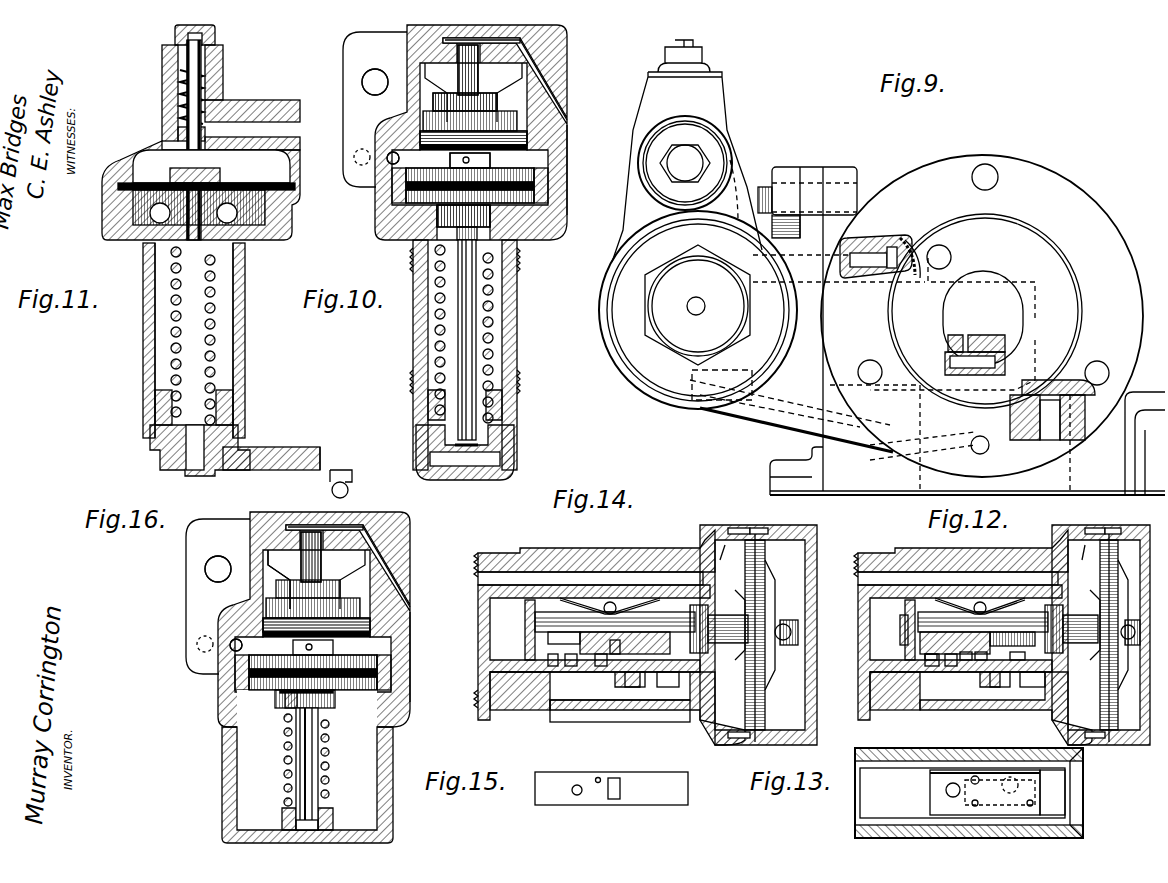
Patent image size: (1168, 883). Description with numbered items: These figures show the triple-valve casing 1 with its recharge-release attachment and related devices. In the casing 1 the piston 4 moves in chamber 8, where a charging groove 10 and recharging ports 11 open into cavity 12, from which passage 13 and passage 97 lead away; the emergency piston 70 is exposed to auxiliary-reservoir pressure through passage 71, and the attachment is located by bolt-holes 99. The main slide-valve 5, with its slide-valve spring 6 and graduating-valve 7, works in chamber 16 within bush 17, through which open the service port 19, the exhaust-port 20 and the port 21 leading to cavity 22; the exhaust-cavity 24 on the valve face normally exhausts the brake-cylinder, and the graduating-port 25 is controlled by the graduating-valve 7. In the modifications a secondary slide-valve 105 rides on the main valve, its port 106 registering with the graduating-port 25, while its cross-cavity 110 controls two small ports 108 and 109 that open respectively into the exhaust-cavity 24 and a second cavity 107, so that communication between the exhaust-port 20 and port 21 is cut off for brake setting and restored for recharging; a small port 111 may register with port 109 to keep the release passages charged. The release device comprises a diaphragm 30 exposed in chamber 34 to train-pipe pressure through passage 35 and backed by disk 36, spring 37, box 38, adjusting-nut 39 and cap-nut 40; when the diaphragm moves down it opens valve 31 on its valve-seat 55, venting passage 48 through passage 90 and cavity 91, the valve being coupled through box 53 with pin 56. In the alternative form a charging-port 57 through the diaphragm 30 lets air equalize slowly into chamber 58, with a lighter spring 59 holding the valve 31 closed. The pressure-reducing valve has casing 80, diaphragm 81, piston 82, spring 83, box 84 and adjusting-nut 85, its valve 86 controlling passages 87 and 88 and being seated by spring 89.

In FIG. 9, the main casing 1 is at (1117, 234).
In FIG. 14, the piston 4 is at (768, 564).
In FIG. 12, the piston 4 is at (1120, 574).
In FIG. 12, the slide-valve 5 is at (933, 666).
In FIG. 13, the slide-valve 5 is at (930, 774).
In FIG. 14, the slide-valve spring 6 is at (590, 581).
In FIG. 12, the slide-valve spring 6 is at (958, 581).
In FIG. 12, the graduating-valve 7 is at (1015, 635).
In FIG. 14, the chamber 8 is at (786, 644).
In FIG. 12, the chamber 8 is at (1130, 647).
In FIG. 14, the charging groove 10 is at (727, 557).
In FIG. 12, the charging groove 10 is at (1087, 559).
In FIG. 9, the recharging ports 11 is at (918, 255).
In FIG. 14, the recharging ports 11 is at (740, 528).
In FIG. 12, the recharging ports 11 is at (1112, 528).
In FIG. 9, the cavity 12 is at (906, 245).
In FIG. 14, the cavity 12 is at (757, 530).
In FIG. 12, the cavity 12 is at (1108, 530).
In FIG. 14, the passage 13 is at (500, 578).
In FIG. 12, the passage 13 is at (872, 578).
In FIG. 14, the slide-valve chamber 16 is at (708, 612).
In FIG. 12, the slide-valve chamber 16 is at (1071, 626).
In FIG. 9, the bush 17 is at (955, 338).
In FIG. 14, the bush 17 is at (605, 598).
In FIG. 12, the bush 17 is at (1020, 596).
In FIG. 14, the service port 19 is at (590, 666).
In FIG. 12, the service port 19 is at (940, 660).
In FIG. 14, the exhaust-port 20 is at (635, 679).
In FIG. 12, the exhaust-port 20 is at (1000, 679).
In FIG. 13, the exhaust-port 20 is at (1040, 774).
In FIG. 9, the port 21 is at (985, 340).
In FIG. 14, the port 21 is at (708, 672).
In FIG. 12, the port 21 is at (1040, 660).
In FIG. 13, the port 21 is at (1035, 805).
In FIG. 9, the cavity 22 is at (952, 324).
In FIG. 14, the cavity 22 is at (668, 679).
In FIG. 12, the cavity 22 is at (1032, 679).
In FIG. 14, the exhaust-cavity 24 is at (620, 709).
In FIG. 13, the exhaust-cavity 24 is at (1035, 790).
In FIG. 14, the graduating-port 25 is at (575, 660).
In FIG. 12, the graduating-port 25 is at (951, 666).
In FIG. 13, the graduating-port 25 is at (946, 790).
In FIG. 10, the diaphragm 30 is at (392, 190).
In FIG. 16, the diaphragm 30 is at (235, 680).
In FIG. 10, the valve 31 is at (455, 60).
In FIG. 16, the valve 31 is at (308, 545).
In FIG. 10, the chamber 34 is at (440, 145).
In FIG. 16, the chamber 34 is at (330, 650).
In FIG. 10, the passage 35 is at (388, 162).
In FIG. 9, the passage 35 is at (796, 404).
In FIG. 16, the passage 35 is at (228, 645).
In FIG. 10, the disk 36 is at (440, 212).
In FIG. 16, the disk 36 is at (385, 680).
In FIG. 10, the spring 37 is at (495, 292).
In FIG. 10, the box 38 is at (522, 250).
In FIG. 10, the adjusting-nut 39 is at (517, 395).
In FIG. 10, the cap-nut 40 is at (516, 436).
In FIG. 10, the passage 48 is at (540, 68).
In FIG. 16, the passage 48 is at (395, 566).
In FIG. 10, the box 53 is at (500, 110).
In FIG. 10, the valve-seat 55 is at (445, 55).
In FIG. 16, the valve-seat 55 is at (290, 542).
In FIG. 10, the pin 56 is at (490, 158).
In FIG. 16, the charging-port 57 is at (270, 694).
In FIG. 16, the chamber 58 is at (307, 785).
In FIG. 16, the spring 59 is at (330, 772).
In FIG. 9, the piston 70 is at (1088, 430).
In FIG. 9, the passage 71 is at (1058, 390).
In FIG. 11, the casing 80 is at (162, 106).
In FIG. 11, the diaphragm 81 is at (165, 200).
In FIG. 11, the piston 82 is at (246, 248).
In FIG. 11, the spring 83 is at (215, 280).
In FIG. 11, the box 84 is at (246, 326).
In FIG. 11, the adjusting-nut 85 is at (236, 404).
In FIG. 11, the valve 86 is at (202, 40).
In FIG. 11, the passage 87 is at (268, 128).
In FIG. 11, the passage 88 is at (201, 190).
In FIG. 11, the spring 89 is at (205, 88).
In FIG. 10, the passage 90 is at (560, 135).
In FIG. 16, the passage 90 is at (403, 622).
In FIG. 16, the cavity 91 is at (275, 585).
In FIG. 9, the passage 97 is at (876, 256).
In FIG. 10, the bolt-holes 99 is at (375, 82).
In FIG. 16, the bolt-holes 99 is at (218, 569).
In FIG. 14, the secondary slide-valve 105 is at (525, 648).
In FIG. 12, the secondary slide-valve 105 is at (902, 628).
In FIG. 15, the secondary slide-valve 105 is at (658, 805).
In FIG. 14, the port 106 is at (575, 660).
In FIG. 12, the port 106 is at (922, 645).
In FIG. 15, the port 106 is at (575, 793).
In FIG. 12, the cavity 107 is at (1018, 660).
In FIG. 13, the cavity 107 is at (1000, 830).
In FIG. 14, the port 108 is at (605, 666).
In FIG. 12, the port 108 is at (981, 660).
In FIG. 12, the port 109 is at (966, 660).
In FIG. 13, the port 109 is at (972, 804).
In FIG. 14, the cavity 110 is at (612, 654).
In FIG. 12, the cavity 110 is at (945, 635).
In FIG. 15, the cavity 110 is at (610, 800).
In FIG. 15, the port 111 is at (598, 783).